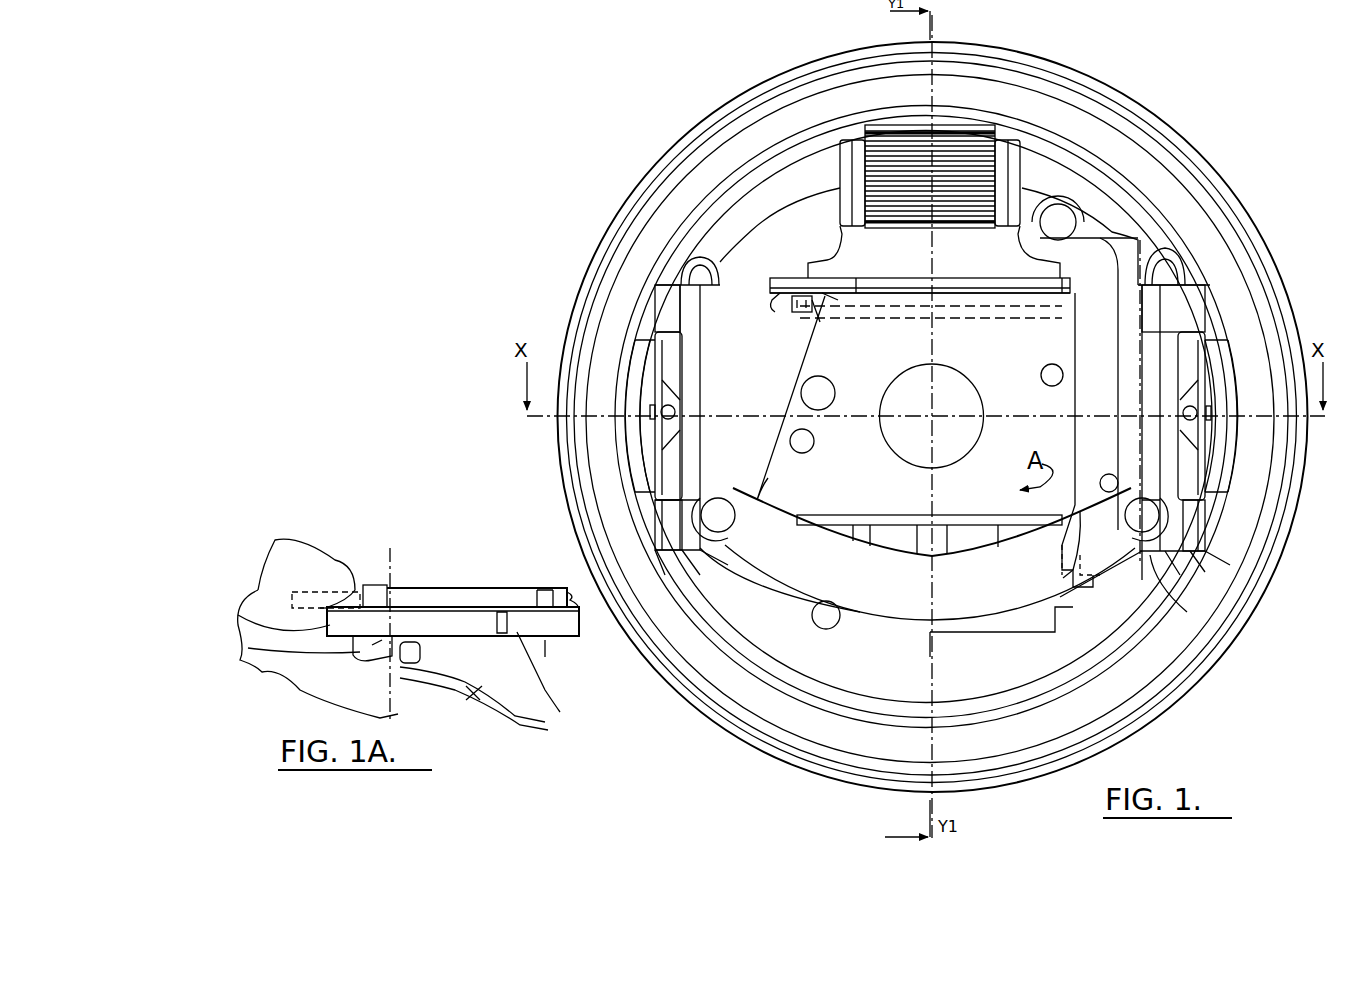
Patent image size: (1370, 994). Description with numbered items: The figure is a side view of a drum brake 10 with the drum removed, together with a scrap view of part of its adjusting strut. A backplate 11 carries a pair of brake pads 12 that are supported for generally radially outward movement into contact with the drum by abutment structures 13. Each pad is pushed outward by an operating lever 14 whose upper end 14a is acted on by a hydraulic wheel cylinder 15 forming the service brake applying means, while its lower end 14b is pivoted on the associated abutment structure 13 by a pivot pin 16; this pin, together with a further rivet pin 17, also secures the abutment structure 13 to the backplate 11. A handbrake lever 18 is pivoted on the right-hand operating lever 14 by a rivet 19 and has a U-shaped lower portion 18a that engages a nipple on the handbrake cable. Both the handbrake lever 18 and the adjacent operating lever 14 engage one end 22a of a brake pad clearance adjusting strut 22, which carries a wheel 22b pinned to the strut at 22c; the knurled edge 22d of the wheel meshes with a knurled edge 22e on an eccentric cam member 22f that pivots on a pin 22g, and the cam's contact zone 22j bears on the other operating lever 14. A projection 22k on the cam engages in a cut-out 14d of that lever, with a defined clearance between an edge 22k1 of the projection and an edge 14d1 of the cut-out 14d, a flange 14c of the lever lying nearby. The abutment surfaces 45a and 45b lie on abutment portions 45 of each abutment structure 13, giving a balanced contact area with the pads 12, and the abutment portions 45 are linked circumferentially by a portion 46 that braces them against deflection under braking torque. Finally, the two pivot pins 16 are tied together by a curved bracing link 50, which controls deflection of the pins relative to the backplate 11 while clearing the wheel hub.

In FIG. 1, the brake 10 is at (718, 172).
In FIG. 1, the backplate 11 is at (926, 417).
In FIG. 1, the brake pads 12 is at (640, 372).
In FIG. 1, the abutment structures 13 is at (666, 530).
In FIG. 1, the operating lever 14 is at (775, 407).
In FIG. 1A, the operating lever 14 is at (258, 590).
In FIG. 1, the upper end of operating lever 14a is at (827, 200).
In FIG. 1, the lower end of operating lever 14b is at (704, 548).
In FIG. 1, the backing plate flange 14c is at (670, 433).
In FIG. 1, the cut-out 14d is at (821, 324).
In FIG. 1A, the cut-out 14d is at (472, 700).
In FIG. 1A, the edge of cut-out 14d1 is at (497, 718).
In FIG. 1, the hydraulic wheel cylinder 15 is at (895, 178).
In FIG. 1, the pivot pin 16 is at (720, 518).
In FIG. 1, the rivet pin 17 is at (690, 295).
In FIG. 1, the handbrake lever 18 is at (1100, 437).
In FIG. 1, the U-shaped lower portion of handbrake lever 18a is at (1090, 583).
In FIG. 1, the rivet 19 is at (1058, 222).
In FIG. 1, the brake pad clearance adjusting strut 22 is at (928, 296).
In FIG. 1A, the brake pad clearance adjusting strut 22 is at (467, 602).
In FIG. 1, the end of adjusting strut 22a is at (1064, 293).
In FIG. 1, the wheel 22b is at (864, 294).
In FIG. 1A, the wheel 22b is at (550, 637).
In FIG. 1, the pin location of wheel 22c is at (856, 290).
In FIG. 1A, the pin location of wheel 22c is at (548, 588).
In FIG. 1A, the knurled edge of wheel 22d is at (560, 712).
In FIG. 1A, the knurled edge of cam member 22e is at (482, 612).
In FIG. 1, the eccentric cam member 22f is at (822, 300).
In FIG. 1A, the eccentric cam member 22f is at (430, 625).
In FIG. 1A, the pin 22g is at (395, 585).
In FIG. 1, the contact zone 22j is at (778, 298).
In FIG. 1A, the contact zone 22j is at (238, 615).
In FIG. 1, the projection 22k is at (800, 314).
In FIG. 1A, the projection 22k is at (354, 667).
In FIG. 1A, the edge of projection 22k1 is at (248, 648).
In FIG. 1, the abutment portions 45 is at (665, 305).
In FIG. 1, the abutment surface 45a is at (660, 340).
In FIG. 1, the abutment surface 45b is at (656, 505).
In FIG. 1, the link portion 46 is at (700, 440).
In FIG. 1, the bracing link 50 is at (952, 585).